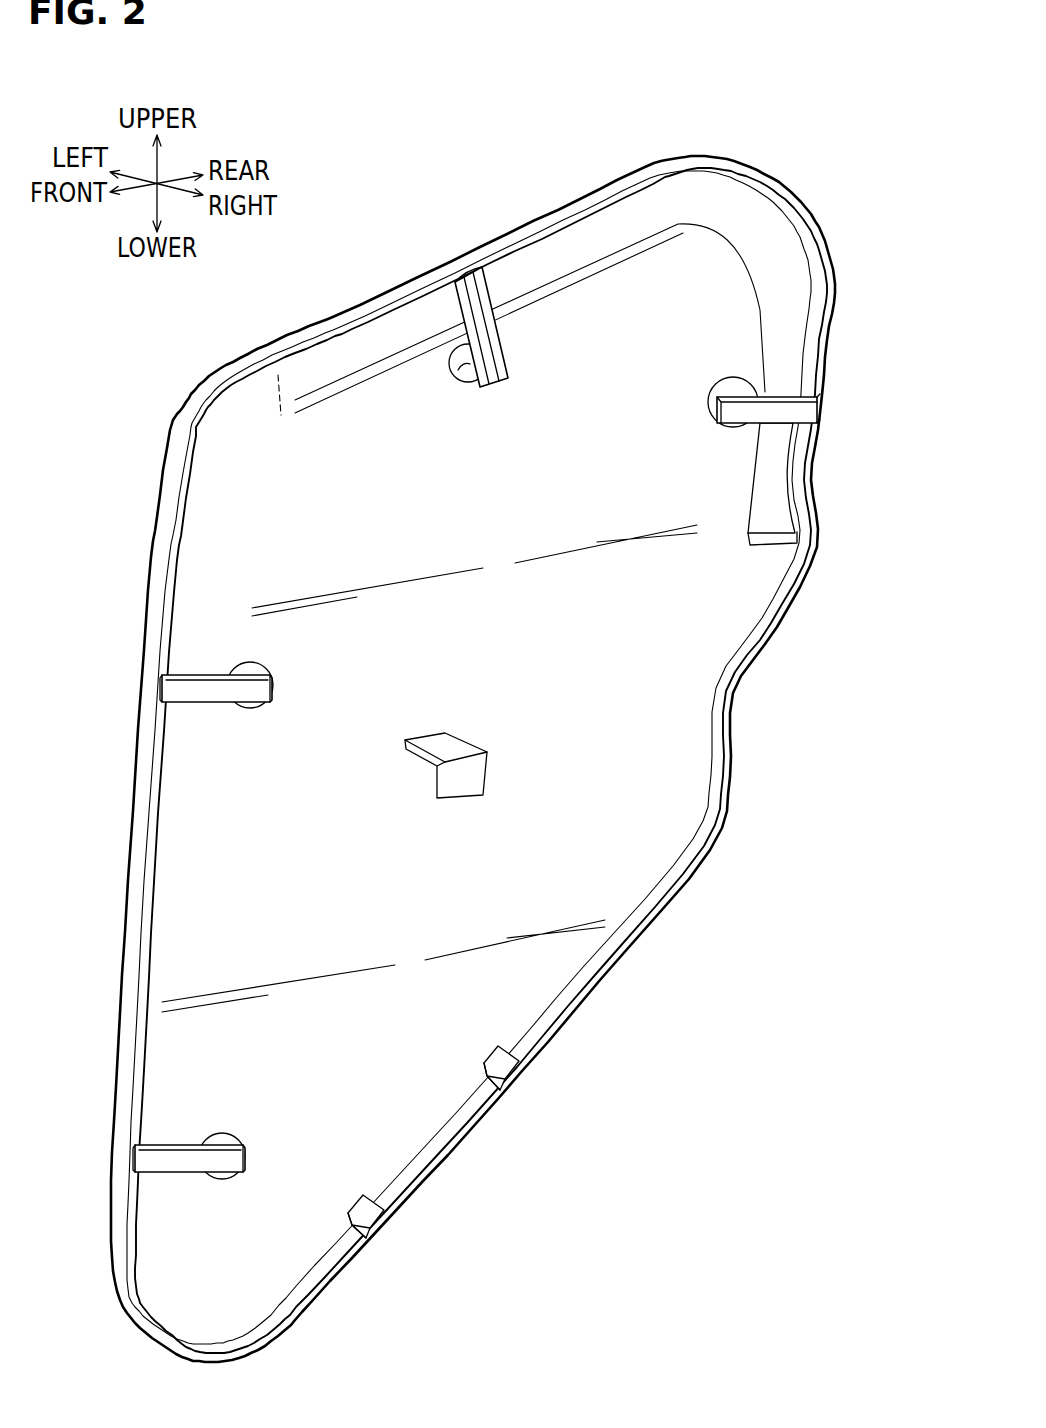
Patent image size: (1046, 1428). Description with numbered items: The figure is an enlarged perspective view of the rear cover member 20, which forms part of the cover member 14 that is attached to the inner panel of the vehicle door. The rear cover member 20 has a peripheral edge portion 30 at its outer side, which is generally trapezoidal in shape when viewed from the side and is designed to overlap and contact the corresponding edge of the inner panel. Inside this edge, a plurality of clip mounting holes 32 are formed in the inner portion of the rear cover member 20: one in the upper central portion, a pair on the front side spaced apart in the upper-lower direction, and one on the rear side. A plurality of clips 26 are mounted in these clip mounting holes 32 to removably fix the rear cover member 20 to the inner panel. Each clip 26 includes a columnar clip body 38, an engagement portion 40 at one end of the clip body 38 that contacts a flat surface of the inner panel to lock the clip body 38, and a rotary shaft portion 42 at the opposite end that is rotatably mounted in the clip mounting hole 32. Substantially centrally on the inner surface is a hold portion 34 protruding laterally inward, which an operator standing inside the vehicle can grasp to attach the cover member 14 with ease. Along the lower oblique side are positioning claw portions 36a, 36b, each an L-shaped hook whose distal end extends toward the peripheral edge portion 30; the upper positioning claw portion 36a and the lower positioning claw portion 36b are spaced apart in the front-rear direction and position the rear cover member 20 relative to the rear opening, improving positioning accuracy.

The rear cover member 20 is at (598, 160).
The cover member 14 is at (481, 760).
The clip 26 is at (493, 283).
The peripheral edge portion 30 is at (728, 792).
The clip mounting hole 32 is at (458, 368).
The hold portion 34 is at (463, 798).
The positioning claw portion 36a is at (511, 1074).
The positioning claw portion 36b is at (376, 1223).
The clip body 38 is at (492, 341).
The engagement portion 40 is at (452, 283).
The rotary shaft portion 42 is at (471, 380).